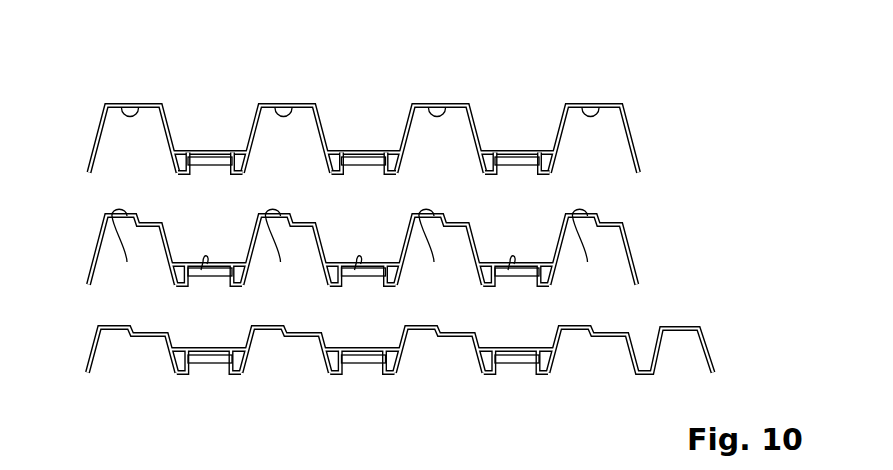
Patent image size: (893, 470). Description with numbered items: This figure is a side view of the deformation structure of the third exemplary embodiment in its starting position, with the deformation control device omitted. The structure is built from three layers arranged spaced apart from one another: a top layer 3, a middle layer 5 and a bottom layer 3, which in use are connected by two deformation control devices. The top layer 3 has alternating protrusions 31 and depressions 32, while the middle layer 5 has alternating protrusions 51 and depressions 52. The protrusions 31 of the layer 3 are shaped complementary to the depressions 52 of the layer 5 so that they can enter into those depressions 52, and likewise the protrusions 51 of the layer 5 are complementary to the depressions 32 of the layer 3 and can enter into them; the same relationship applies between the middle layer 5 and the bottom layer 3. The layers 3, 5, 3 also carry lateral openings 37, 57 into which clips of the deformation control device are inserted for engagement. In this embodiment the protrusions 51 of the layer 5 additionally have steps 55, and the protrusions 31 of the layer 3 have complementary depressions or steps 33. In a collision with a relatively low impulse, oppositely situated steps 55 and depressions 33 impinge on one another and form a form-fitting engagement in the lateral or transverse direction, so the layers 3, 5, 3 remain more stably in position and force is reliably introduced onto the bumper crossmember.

The layer 3 is at (674, 124).
The middle layer 5 is at (674, 249).
The protrusion 31 is at (222, 177).
The depression 32 is at (129, 108).
The depression or step 33 is at (196, 177).
The lateral opening 37 is at (207, 157).
The protrusion 51 is at (127, 262).
The depression 52 is at (201, 270).
The step 55 is at (133, 211).
The lateral opening 57 is at (223, 277).